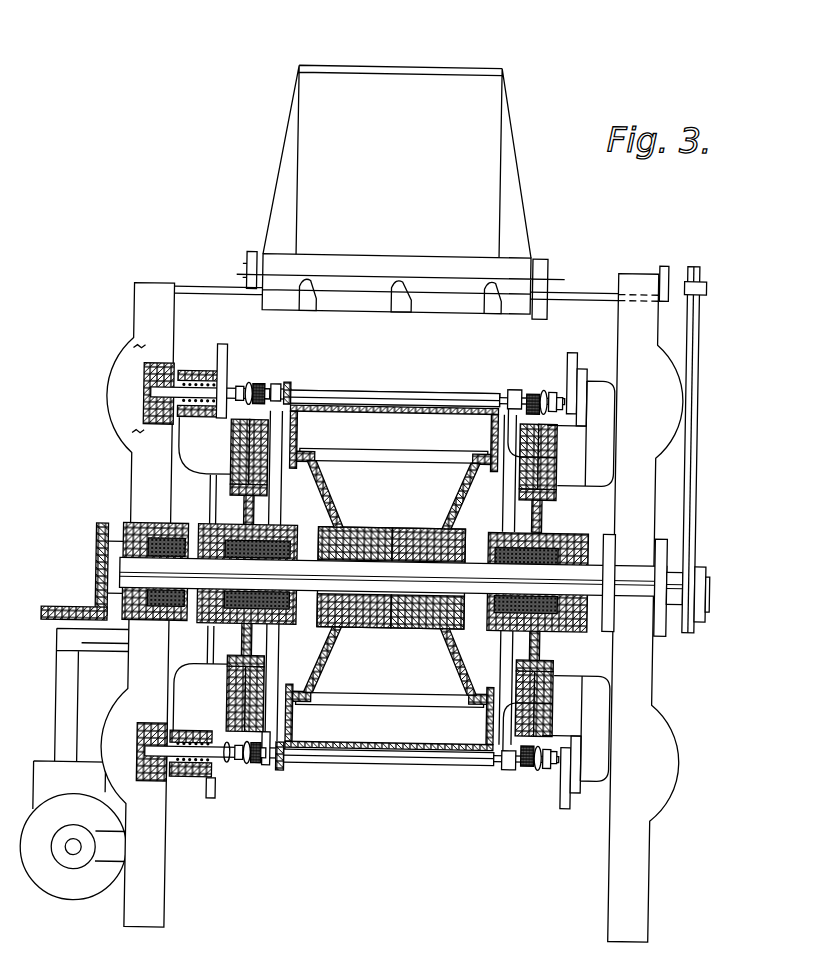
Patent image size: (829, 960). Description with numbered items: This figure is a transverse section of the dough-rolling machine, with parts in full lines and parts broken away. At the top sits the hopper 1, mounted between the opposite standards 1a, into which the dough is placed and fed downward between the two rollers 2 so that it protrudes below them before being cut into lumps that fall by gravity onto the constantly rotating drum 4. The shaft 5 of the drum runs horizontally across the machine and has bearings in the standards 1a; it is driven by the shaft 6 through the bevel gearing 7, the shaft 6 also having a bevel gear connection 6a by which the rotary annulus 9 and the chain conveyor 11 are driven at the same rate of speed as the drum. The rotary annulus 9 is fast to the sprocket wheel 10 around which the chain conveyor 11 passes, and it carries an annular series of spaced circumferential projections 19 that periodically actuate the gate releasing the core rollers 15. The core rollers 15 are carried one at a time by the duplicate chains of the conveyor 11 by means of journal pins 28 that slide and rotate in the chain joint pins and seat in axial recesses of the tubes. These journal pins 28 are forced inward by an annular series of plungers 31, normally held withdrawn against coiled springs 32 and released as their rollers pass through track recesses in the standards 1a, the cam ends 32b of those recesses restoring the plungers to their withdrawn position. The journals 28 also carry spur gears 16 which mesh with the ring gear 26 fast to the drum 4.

The hopper 1 is at (402, 191).
The standards 1a is at (131, 493).
The rollers 2 is at (393, 18).
The rotary drum 4 is at (428, 410).
The drum shaft 5 is at (96, 562).
The drive shaft 6 is at (72, 852).
The bevel gear connection 6a is at (233, 337).
The bevel gearing 7 is at (62, 614).
The rotary annulus 9 is at (302, 457).
The sprocket wheel 10 is at (236, 428).
The chain conveyor 11 is at (256, 389).
The core rollers 15 is at (384, 395).
The spur gears 16 is at (286, 392).
The circumferential projections 19 is at (274, 387).
The ring gear 26 is at (322, 483).
The journal pins 28 is at (286, 775).
The plungers 31 is at (228, 782).
The coiled springs 32 is at (188, 784).
The cam ends 32b is at (168, 745).